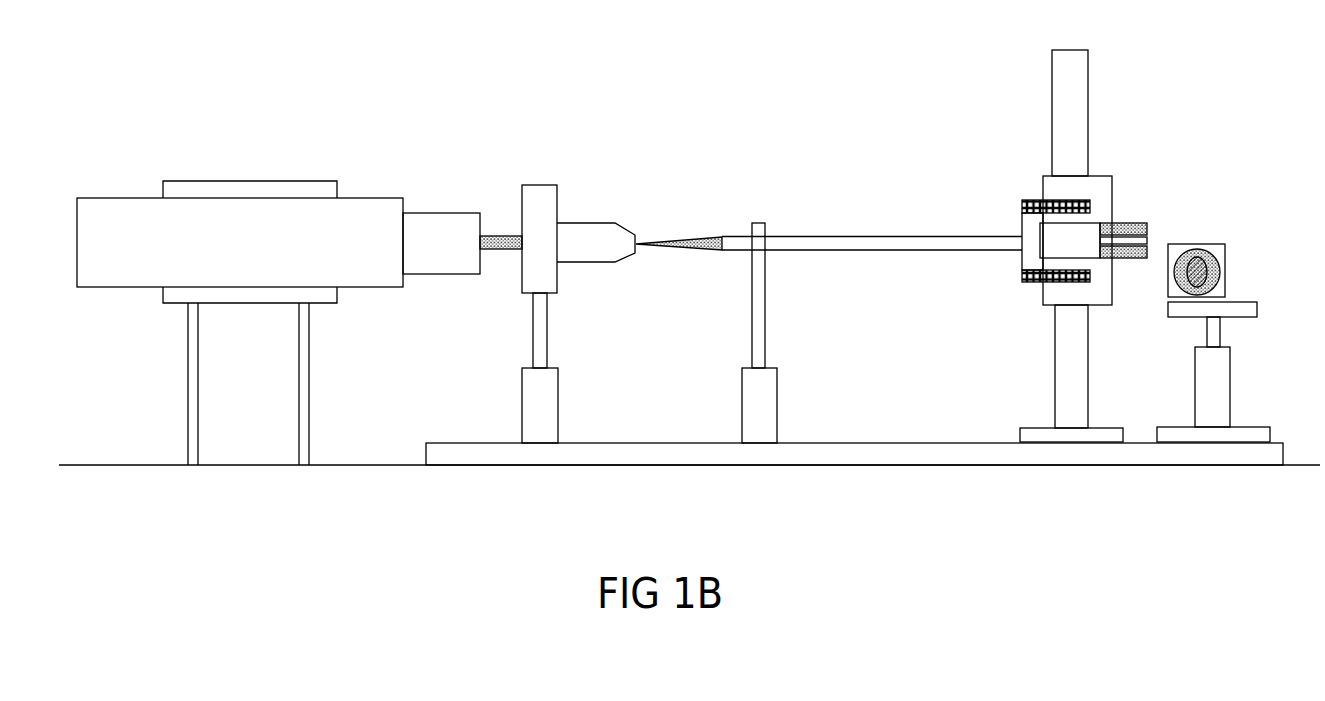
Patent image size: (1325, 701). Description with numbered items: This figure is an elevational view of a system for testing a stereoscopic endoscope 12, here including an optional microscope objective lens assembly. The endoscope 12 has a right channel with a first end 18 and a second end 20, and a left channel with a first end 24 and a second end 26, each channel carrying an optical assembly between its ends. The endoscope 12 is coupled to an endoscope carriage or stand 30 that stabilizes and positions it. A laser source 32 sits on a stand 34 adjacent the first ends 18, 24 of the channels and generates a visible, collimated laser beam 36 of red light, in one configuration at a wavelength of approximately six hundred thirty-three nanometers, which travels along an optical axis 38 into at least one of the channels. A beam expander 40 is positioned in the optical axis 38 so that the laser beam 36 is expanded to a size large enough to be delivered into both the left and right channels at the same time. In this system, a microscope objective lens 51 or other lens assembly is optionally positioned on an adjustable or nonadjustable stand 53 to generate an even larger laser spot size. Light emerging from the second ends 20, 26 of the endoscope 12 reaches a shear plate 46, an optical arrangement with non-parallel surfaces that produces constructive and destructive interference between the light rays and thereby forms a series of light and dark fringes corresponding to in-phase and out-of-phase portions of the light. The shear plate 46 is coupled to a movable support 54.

The stereoscopic endoscope 12 is at (853, 231).
The first end 18 is at (717, 251).
The second end 20 is at (1129, 214).
The first end 24 is at (722, 237).
The second end 26 is at (1141, 231).
The endoscope carriage or stand 30 is at (1055, 370).
The laser source 32 is at (125, 188).
The stand 34 is at (299, 400).
The laser beam 36 is at (503, 252).
The optical axis 38 is at (500, 232).
The beam expander 40 is at (428, 204).
The shear plate 46 is at (1235, 243).
The microscope objective lens 51 is at (592, 217).
The stand 53 is at (560, 380).
The movable support 54 is at (1279, 425).